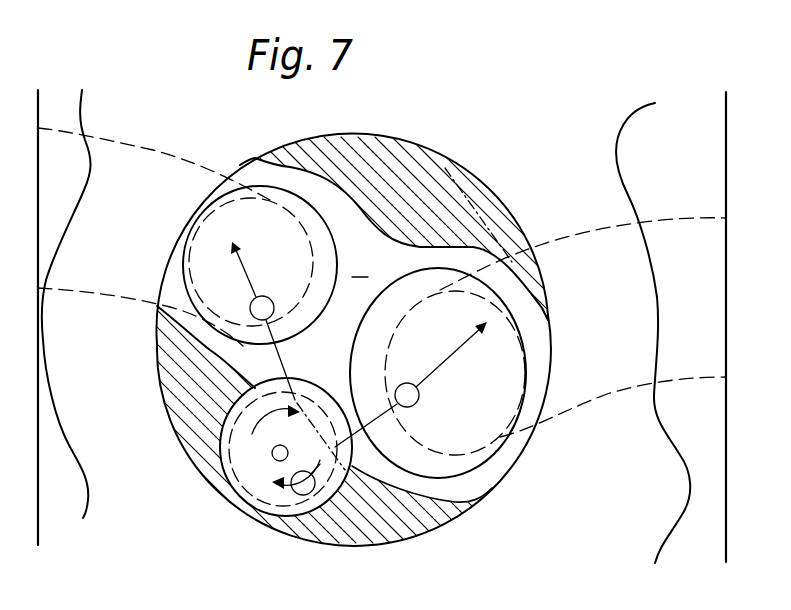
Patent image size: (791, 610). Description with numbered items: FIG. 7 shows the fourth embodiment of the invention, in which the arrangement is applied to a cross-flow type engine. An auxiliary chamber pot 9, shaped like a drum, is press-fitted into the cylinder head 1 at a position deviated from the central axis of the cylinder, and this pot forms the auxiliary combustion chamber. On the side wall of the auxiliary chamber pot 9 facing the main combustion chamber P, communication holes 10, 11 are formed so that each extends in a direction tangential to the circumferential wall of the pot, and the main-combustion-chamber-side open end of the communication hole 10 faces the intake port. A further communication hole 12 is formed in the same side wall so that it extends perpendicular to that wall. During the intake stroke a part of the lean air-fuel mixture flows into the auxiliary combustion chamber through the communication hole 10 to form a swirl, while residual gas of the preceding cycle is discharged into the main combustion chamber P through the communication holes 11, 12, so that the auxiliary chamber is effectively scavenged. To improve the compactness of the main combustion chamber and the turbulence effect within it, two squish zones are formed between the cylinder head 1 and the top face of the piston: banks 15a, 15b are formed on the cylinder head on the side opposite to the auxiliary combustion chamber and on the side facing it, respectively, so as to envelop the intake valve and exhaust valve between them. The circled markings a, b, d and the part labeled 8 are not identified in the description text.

The cylinder head 1 is at (572, 163).
The pressure gap between carrier wall and roller 8 is at (273, 190).
The auxiliary chamber pot 9 is at (222, 446).
The communication hole 10 is at (336, 498).
The communication hole 11 is at (232, 403).
The communication hole 12 is at (273, 457).
The bank 15a is at (459, 192).
The bank 15b is at (413, 518).
The roller a is at (430, 373).
The roller b is at (264, 328).
The roller d is at (286, 450).
The main combustion chamber P is at (360, 264).